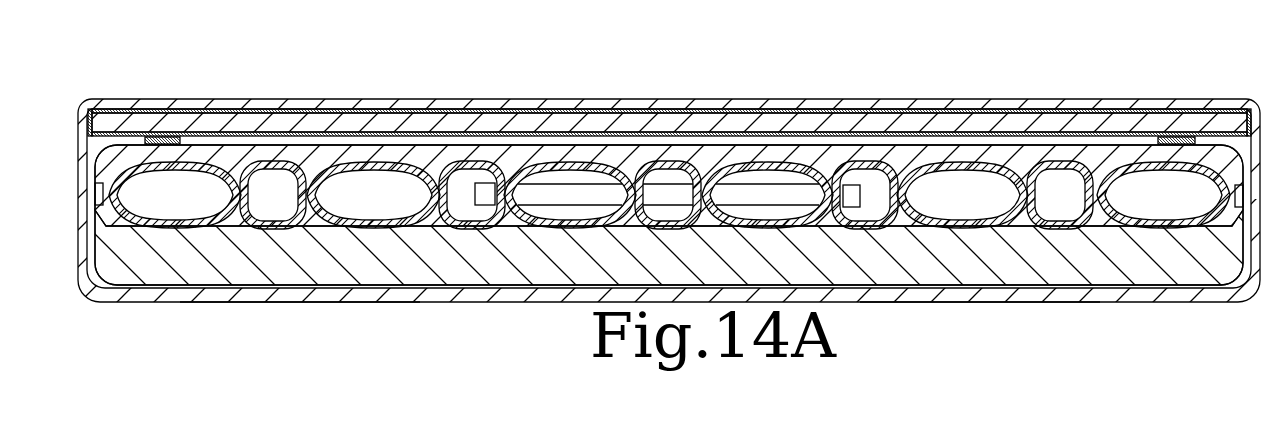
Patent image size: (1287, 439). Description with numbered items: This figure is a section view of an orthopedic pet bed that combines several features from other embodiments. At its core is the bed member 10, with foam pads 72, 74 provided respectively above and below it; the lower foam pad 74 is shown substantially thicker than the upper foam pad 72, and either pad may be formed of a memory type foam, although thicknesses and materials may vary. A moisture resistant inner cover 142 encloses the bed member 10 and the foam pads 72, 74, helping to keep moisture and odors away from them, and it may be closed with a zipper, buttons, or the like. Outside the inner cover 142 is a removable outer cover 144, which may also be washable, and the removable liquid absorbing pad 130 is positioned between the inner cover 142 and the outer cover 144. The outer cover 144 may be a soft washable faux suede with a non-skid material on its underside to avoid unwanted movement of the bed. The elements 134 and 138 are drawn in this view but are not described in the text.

The bed member 10 is at (1012, 323).
The upper foam pad 72 is at (428, 158).
The lower foam pad 74 is at (440, 260).
The removable liquid absorbing pad 130 is at (1095, 123).
The adhesive 134 is at (173, 142).
The cover layer 138 is at (158, 110).
The moisture resistant inner cover 142 is at (973, 287).
The removable outer cover 144 is at (295, 305).